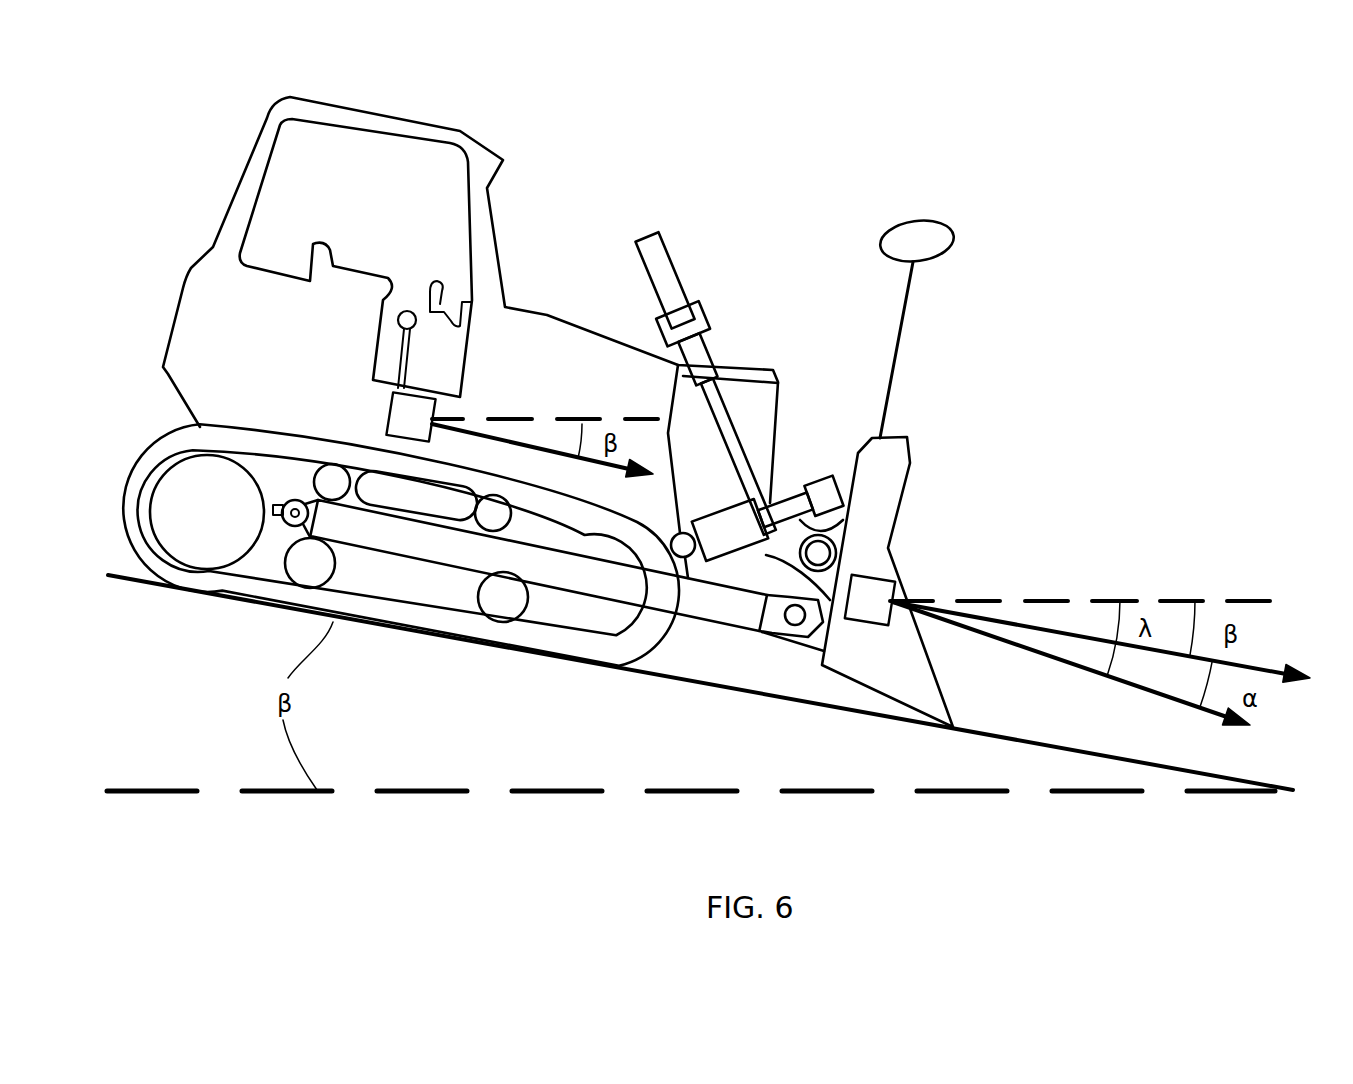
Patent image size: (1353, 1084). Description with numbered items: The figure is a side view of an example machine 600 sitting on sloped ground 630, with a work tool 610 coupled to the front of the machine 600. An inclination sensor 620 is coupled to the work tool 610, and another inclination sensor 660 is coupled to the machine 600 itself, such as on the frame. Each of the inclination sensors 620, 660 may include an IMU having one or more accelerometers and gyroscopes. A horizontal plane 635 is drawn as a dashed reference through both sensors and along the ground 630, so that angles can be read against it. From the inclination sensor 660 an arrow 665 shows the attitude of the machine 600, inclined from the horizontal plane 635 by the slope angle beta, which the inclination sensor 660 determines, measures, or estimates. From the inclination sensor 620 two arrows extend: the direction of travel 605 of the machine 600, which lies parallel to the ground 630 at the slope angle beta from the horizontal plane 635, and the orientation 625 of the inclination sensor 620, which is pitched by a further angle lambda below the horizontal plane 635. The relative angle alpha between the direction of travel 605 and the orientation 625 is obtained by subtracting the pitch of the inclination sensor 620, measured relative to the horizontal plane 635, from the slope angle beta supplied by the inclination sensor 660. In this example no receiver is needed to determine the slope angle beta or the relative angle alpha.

The machine 600 is at (232, 150).
The direction of travel 605 is at (1106, 642).
The work tool 610 is at (905, 497).
The inclination sensor 620 is at (870, 600).
The orientation of inclination sensor 625 is at (1074, 674).
The ground 630 is at (700, 682).
The horizontal plane 635 is at (691, 589).
The inclination sensor 660 is at (410, 416).
The direction of inclination sensor 665 is at (544, 462).